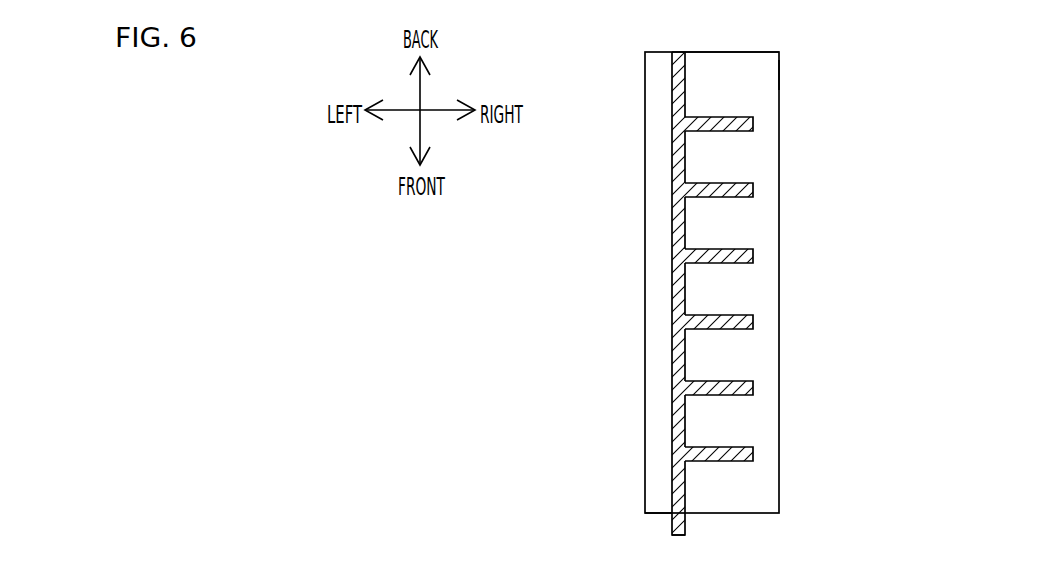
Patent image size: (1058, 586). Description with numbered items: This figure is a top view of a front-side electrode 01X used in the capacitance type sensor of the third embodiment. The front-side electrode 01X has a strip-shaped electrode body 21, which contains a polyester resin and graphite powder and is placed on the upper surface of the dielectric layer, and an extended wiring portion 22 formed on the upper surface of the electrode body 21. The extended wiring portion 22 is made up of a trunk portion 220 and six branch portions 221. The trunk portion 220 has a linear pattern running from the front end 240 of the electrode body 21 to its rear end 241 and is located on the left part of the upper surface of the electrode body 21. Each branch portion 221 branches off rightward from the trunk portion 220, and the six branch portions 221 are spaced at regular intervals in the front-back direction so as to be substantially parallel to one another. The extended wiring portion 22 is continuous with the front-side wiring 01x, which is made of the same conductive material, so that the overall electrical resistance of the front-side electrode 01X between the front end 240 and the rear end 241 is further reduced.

The electrode body 21 is at (762, 290).
The extended wiring portion 22 is at (618, 292).
The trunk portion 220 is at (677, 296).
The branch portions 221 is at (733, 328).
The front end 240 is at (658, 514).
The rear end 241 is at (710, 51).
The front-side electrode 01X is at (779, 75).
The front-side wiring 01x is at (678, 535).